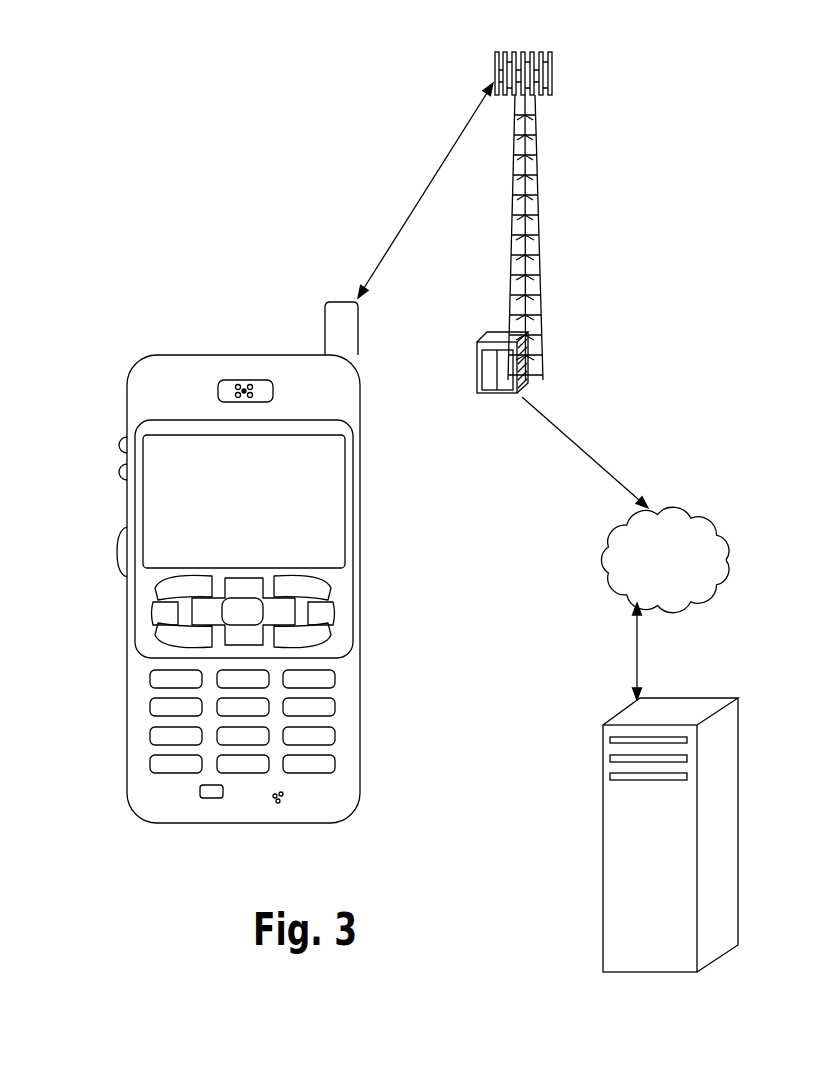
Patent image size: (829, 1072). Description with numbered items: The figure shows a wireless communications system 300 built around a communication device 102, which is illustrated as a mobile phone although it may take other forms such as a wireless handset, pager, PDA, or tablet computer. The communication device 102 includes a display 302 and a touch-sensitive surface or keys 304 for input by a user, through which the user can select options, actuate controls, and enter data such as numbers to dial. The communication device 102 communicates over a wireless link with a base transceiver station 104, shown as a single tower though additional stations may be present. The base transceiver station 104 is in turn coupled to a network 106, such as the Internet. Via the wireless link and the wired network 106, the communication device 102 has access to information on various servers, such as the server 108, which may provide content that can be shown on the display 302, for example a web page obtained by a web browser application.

The wireless communications system 300 is at (351, 70).
The communication device 102 is at (155, 822).
The base transceiver station 104 is at (510, 237).
The network 106 is at (620, 589).
The server 108 is at (603, 803).
The display 302 is at (338, 481).
The keys 304 is at (125, 583).